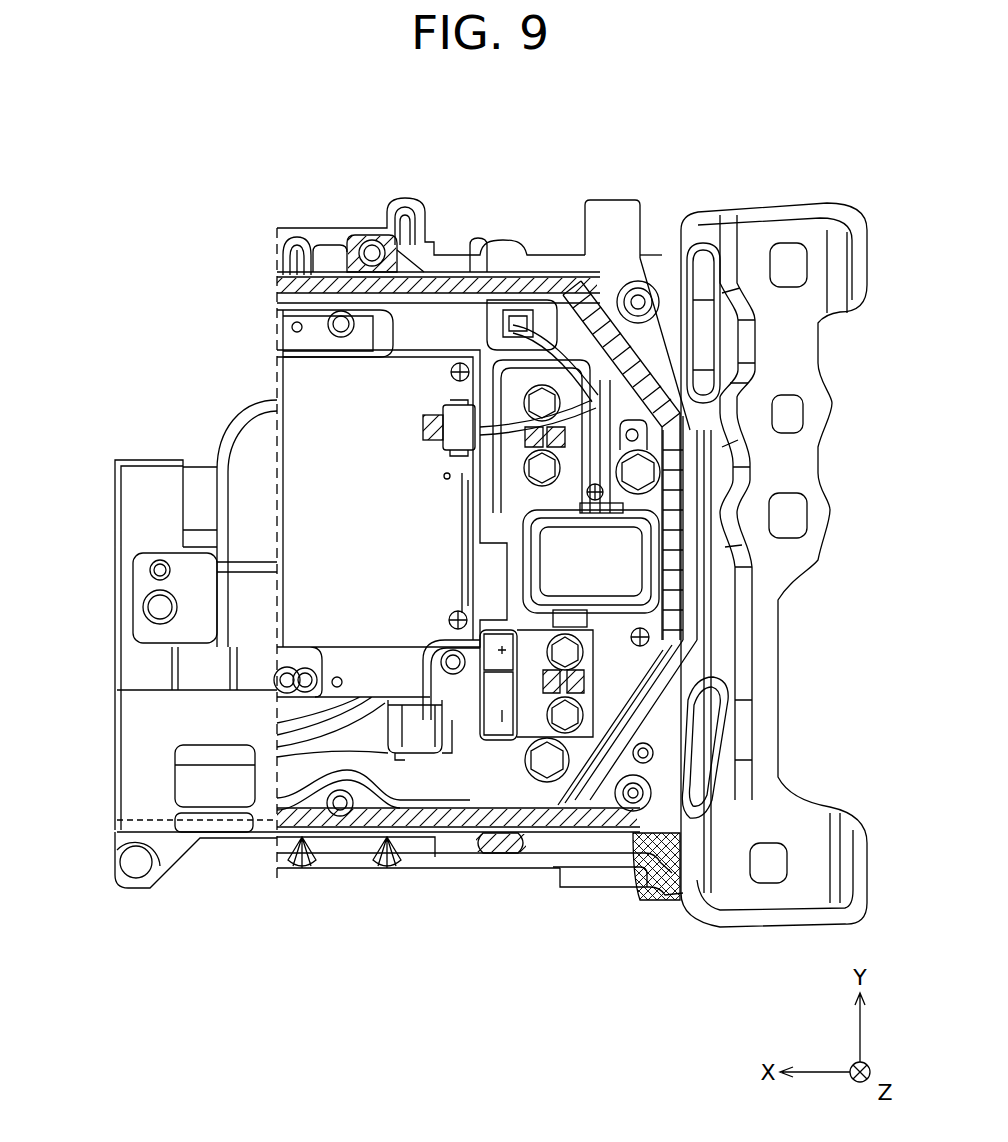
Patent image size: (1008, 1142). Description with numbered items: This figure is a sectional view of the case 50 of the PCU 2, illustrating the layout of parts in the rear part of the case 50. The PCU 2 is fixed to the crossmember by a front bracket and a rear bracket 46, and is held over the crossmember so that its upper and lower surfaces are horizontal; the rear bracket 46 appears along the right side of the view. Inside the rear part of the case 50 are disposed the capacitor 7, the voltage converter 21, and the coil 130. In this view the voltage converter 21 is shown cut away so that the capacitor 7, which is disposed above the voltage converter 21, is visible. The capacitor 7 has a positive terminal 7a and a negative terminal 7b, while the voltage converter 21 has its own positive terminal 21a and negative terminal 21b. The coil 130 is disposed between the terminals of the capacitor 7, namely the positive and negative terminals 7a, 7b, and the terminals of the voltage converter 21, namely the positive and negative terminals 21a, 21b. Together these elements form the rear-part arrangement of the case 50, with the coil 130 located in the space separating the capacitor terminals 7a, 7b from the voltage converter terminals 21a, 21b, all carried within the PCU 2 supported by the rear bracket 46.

The PCU 2 is at (262, 202).
The case 50 is at (462, 283).
The capacitor 7 is at (260, 432).
The positive terminal 7a is at (562, 463).
The negative terminal 7b is at (650, 430).
The voltage converter 21 is at (300, 485).
The positive terminal 21a is at (527, 660).
The negative terminal 21b is at (530, 725).
The coil 130 is at (632, 563).
The rear bracket 46 is at (770, 720).